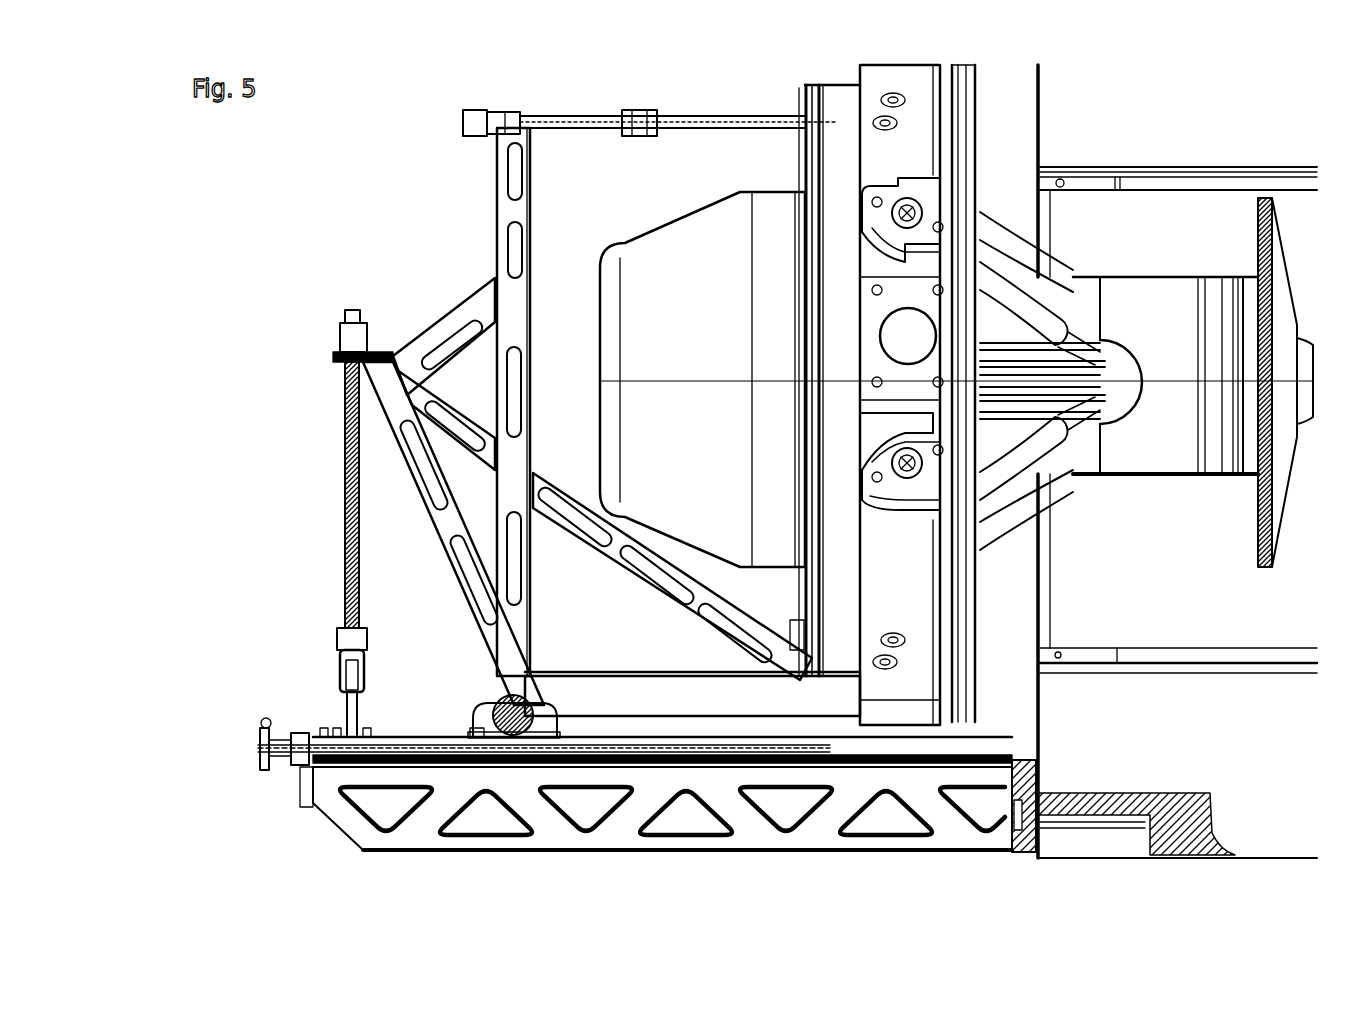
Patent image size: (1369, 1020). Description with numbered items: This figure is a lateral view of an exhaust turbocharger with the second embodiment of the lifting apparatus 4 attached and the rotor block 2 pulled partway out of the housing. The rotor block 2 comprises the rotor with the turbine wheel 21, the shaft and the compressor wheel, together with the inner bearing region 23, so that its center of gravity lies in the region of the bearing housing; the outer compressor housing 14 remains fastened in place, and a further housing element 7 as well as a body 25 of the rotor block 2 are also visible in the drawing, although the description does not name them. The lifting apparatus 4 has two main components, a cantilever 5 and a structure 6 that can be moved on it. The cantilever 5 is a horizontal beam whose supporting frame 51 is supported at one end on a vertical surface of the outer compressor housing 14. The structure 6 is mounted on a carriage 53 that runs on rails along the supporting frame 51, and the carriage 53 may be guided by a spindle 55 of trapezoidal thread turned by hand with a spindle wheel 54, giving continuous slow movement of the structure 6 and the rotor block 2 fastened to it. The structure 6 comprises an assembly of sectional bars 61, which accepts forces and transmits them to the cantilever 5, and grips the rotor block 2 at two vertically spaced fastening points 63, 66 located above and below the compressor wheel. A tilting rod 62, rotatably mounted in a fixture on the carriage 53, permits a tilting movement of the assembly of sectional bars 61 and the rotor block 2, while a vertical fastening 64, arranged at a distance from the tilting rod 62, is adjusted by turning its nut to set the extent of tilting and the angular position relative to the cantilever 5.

The rotor block 2 is at (689, 201).
The lifting apparatus 4 is at (171, 697).
The cantilever 5 is at (211, 832).
The structure 6 is at (212, 562).
The mounting block 7 is at (1030, 783).
The outer compressor housing 14 is at (1062, 150).
The turbine wheel 21 is at (1255, 488).
The inner bearing region 23 is at (918, 642).
The housing body 25 is at (653, 262).
The supporting frame 51 is at (347, 818).
The carriage 53 is at (335, 733).
The spindle wheel 54 is at (275, 755).
The threaded rod 55 is at (368, 750).
The assembly of sectional bars 61 is at (508, 492).
The tilting rod 62 is at (500, 708).
The fastening point 63 is at (744, 123).
The vertical fastening 64 is at (350, 530).
The fastening point 66 is at (800, 676).